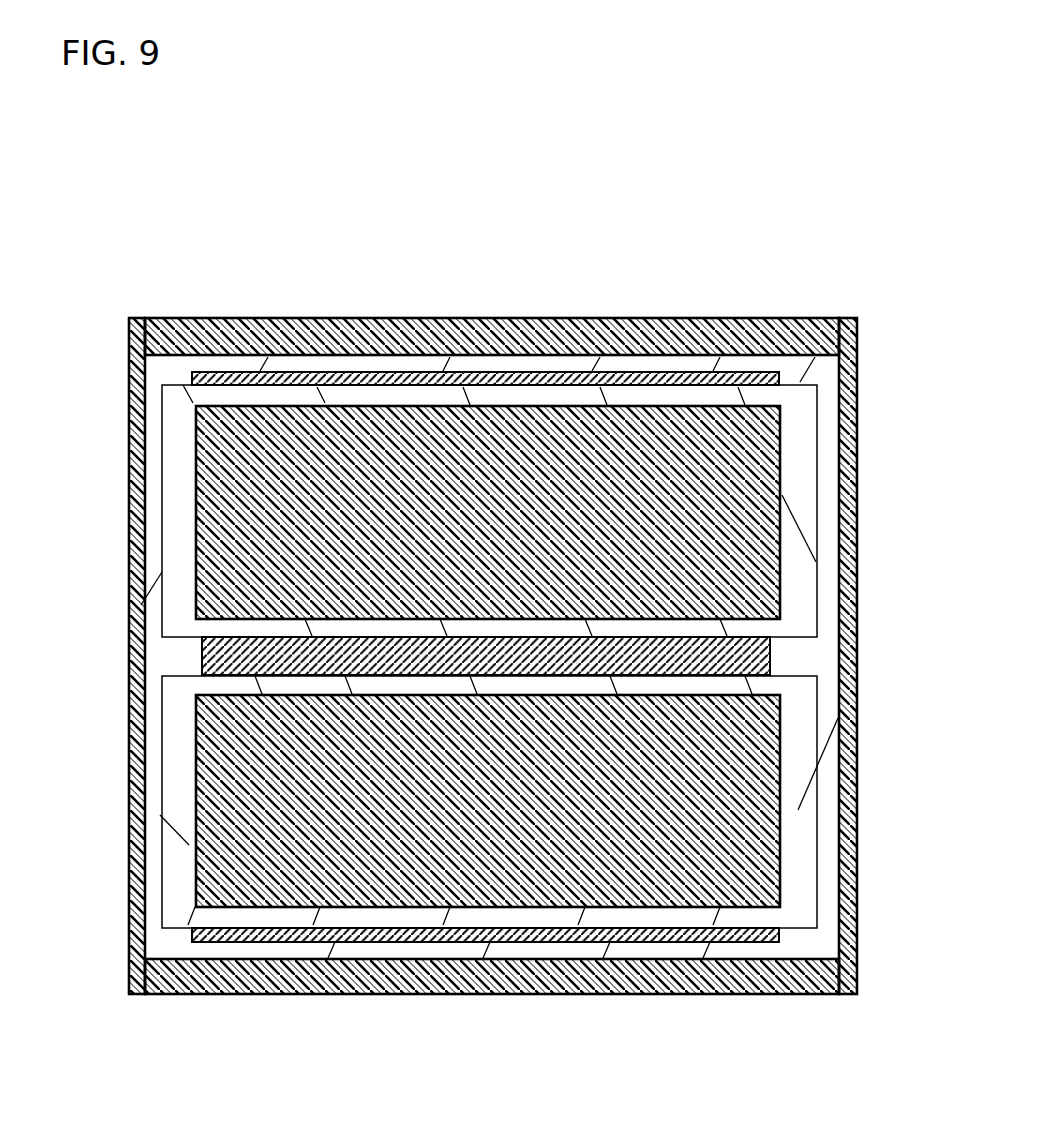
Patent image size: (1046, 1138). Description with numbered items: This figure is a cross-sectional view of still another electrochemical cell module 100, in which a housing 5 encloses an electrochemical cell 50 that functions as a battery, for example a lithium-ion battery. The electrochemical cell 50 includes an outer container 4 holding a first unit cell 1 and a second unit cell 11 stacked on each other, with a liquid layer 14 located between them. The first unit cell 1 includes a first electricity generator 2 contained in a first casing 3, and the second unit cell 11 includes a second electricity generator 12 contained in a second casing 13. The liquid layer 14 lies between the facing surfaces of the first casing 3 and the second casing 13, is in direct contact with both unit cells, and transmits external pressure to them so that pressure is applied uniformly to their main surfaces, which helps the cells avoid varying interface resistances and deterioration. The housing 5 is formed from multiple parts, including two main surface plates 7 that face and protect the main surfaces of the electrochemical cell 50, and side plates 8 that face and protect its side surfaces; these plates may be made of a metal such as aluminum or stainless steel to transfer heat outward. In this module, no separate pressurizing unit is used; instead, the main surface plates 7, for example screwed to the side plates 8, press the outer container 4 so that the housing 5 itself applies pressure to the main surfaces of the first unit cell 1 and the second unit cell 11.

The electrochemical cell module 100 is at (163, 207).
The first unit cell 1 is at (510, 397).
The first electricity generator 2 is at (560, 405).
The first casing 3 is at (372, 397).
The outer container 4 is at (175, 367).
The housing 5 is at (503, 660).
The main surface plates 7 is at (598, 340).
The side plates 8 is at (858, 332).
The second unit cell 11 is at (490, 916).
The second electricity generator 12 is at (372, 875).
The second casing 13 is at (620, 915).
The liquid layer 14 is at (782, 379).
The electrochemical cell 50 is at (828, 597).